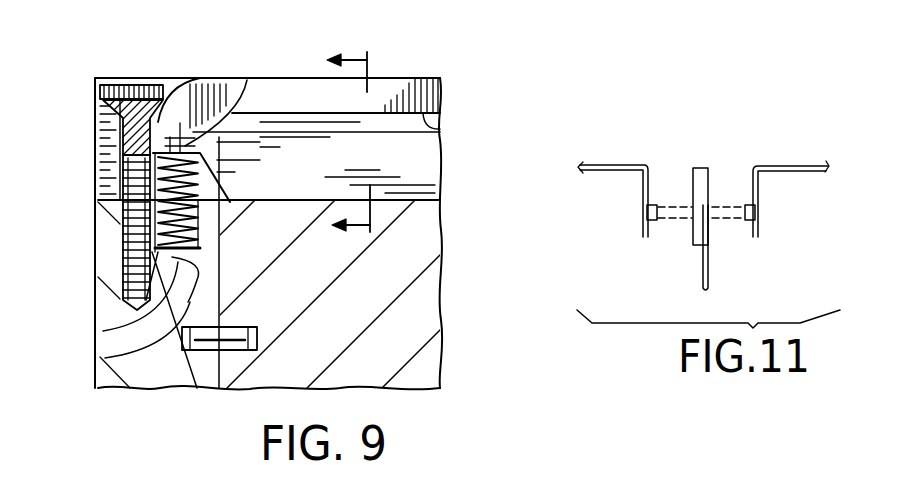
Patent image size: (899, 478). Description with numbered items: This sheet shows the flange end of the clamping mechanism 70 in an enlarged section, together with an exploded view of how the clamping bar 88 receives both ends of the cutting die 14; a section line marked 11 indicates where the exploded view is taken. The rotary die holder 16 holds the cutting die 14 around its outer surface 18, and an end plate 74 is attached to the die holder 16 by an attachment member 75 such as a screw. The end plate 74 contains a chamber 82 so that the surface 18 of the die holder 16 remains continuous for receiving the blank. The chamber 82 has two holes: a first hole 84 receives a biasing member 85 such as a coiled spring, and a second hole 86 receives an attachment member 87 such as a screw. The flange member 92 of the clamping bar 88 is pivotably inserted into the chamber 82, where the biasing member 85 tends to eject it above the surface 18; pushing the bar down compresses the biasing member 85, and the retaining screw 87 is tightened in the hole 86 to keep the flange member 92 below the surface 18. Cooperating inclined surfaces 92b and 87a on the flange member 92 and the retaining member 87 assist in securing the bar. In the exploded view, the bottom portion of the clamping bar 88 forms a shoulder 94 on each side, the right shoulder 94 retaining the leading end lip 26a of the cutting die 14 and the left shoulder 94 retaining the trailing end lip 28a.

In FIG. 9, the clamping mechanism 70 is at (93, 76).
In FIG. 9, the attachment member 87 is at (126, 84).
In FIG. 9, the inclined surface 87a is at (108, 112).
In FIG. 9, the outer surface 18 is at (170, 78).
In FIG. 9, the flange member 92 is at (247, 80).
In FIG. 9, the inclined surface 92b is at (121, 145).
In FIG. 9, the chamber 82 is at (97, 189).
In FIG. 9, the clamping bar 88 is at (423, 77).
In FIG. 11, the clamping bar 88 is at (703, 292).
In FIG. 9, the shoulder 94 is at (441, 133).
In FIG. 11, the shoulder 94 is at (708, 205).
In FIG. 9, the rotary die holder 16 is at (424, 303).
In FIG. 9, the second hole 86 is at (112, 292).
In FIG. 9, the biasing member 85 is at (103, 331).
In FIG. 9, the first hole 84 is at (105, 358).
In FIG. 9, the attachment member 75 is at (200, 351).
In FIG. 9, the end plate 74 is at (120, 388).
In FIG. 9, the section line 11- 11 is at (365, 142).
In FIG. 11, the cutting die 14 is at (603, 165).
In FIG. 11, the lip 28a is at (645, 214).
In FIG. 11, the lip 26a is at (758, 213).